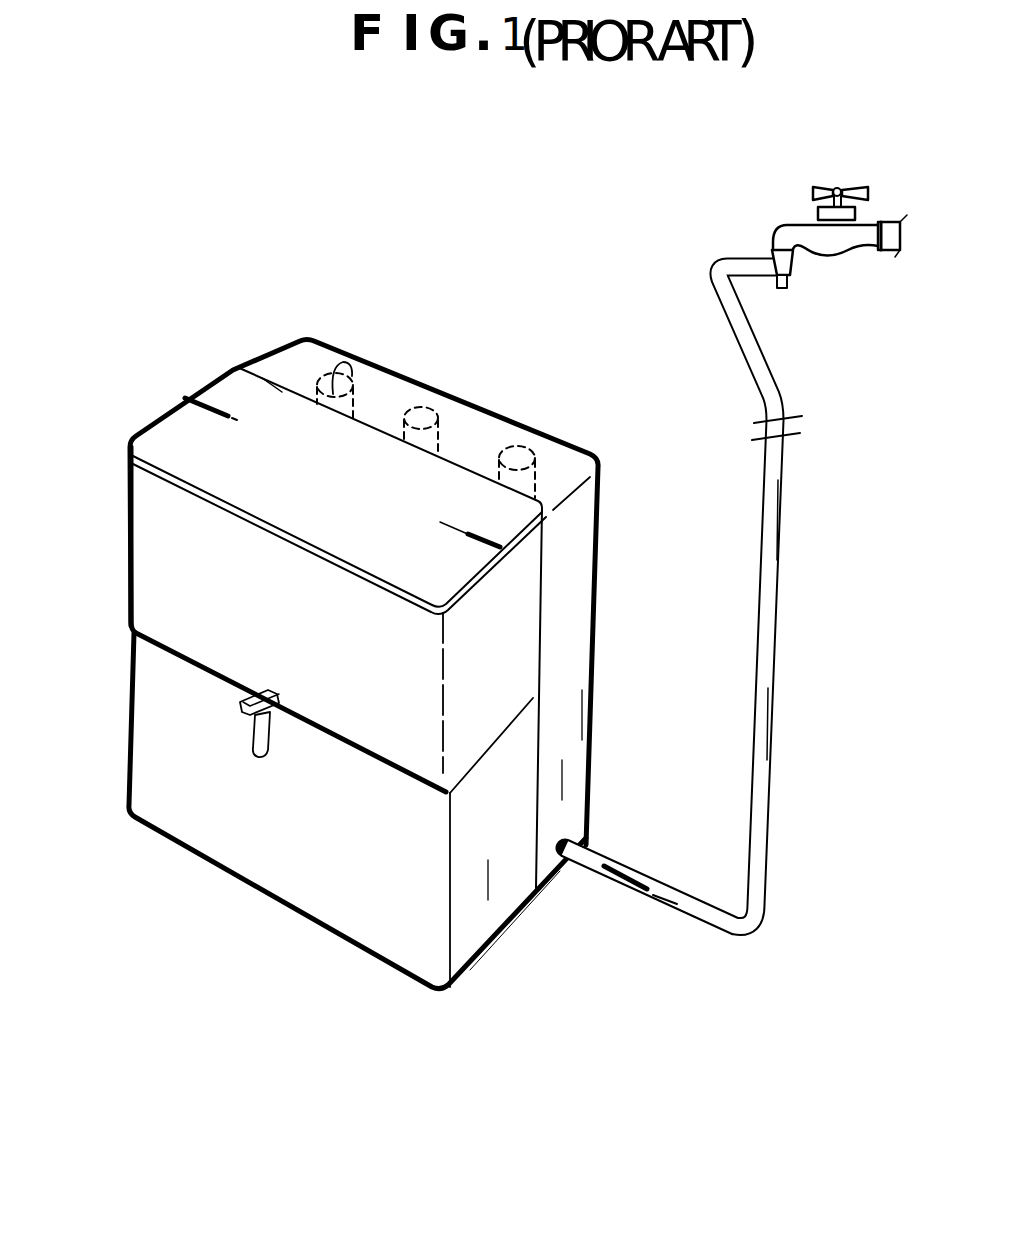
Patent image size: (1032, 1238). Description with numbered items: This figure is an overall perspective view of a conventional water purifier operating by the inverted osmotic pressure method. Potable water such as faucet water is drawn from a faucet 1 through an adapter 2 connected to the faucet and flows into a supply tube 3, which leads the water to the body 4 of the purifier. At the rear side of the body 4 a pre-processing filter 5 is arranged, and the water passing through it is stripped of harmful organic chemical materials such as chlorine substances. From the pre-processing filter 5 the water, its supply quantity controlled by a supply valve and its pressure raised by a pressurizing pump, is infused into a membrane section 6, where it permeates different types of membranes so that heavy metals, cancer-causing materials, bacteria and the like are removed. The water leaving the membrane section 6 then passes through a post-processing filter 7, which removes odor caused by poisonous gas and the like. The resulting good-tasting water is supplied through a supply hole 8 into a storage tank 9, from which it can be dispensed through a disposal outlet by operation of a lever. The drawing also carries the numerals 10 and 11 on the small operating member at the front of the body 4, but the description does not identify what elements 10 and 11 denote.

The faucet 1 is at (795, 237).
The adapter 2 is at (797, 267).
The supply tube 3 is at (767, 643).
The body 4 is at (515, 921).
The pre-processing filter 5 is at (536, 493).
The membrane section 6 is at (438, 417).
The post-processing filter 7 is at (352, 385).
The supply hole 8 is at (277, 388).
The storage tank 9 is at (205, 590).
The lever 10 is at (250, 738).
The discharge cock 11 is at (255, 757).